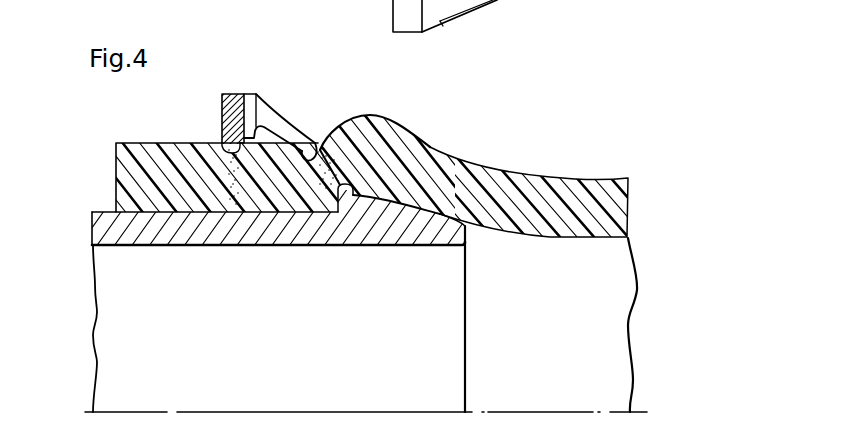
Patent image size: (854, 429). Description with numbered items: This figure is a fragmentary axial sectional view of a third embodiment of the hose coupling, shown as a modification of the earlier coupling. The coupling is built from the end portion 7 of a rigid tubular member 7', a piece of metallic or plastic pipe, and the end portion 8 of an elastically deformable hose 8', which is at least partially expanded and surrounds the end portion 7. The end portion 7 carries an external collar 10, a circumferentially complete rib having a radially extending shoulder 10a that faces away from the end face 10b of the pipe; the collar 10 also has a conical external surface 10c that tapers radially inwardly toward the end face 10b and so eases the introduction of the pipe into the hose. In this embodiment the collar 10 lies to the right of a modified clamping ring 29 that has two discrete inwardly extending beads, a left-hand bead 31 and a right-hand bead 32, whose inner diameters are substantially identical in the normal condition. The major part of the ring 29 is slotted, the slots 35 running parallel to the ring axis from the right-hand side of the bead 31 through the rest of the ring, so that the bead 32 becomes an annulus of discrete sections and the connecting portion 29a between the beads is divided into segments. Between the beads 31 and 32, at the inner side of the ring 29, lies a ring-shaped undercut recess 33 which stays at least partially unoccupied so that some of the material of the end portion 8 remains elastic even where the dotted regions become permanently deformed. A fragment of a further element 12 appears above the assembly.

The end portion of the pipe 7 is at (320, 214).
The rigid tubular member 7' is at (347, 328).
The end portion of the hose 8 is at (553, 214).
The hose 8' is at (657, 325).
The collar 10 is at (355, 190).
The shoulder 10a is at (352, 200).
The end face 10b is at (467, 328).
The conical external surface 10c is at (430, 216).
The blade holder 12 is at (497, 8).
The clamping ring 29 is at (238, 93).
The connecting portion 29a is at (250, 95).
The left-hand bead 31 is at (222, 142).
The right-hand bead 32 is at (313, 142).
The undercut recess 33 is at (256, 126).
The slots 35 is at (275, 111).